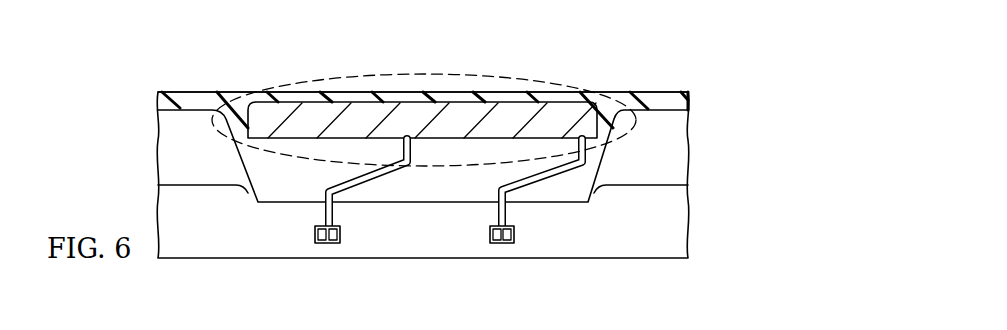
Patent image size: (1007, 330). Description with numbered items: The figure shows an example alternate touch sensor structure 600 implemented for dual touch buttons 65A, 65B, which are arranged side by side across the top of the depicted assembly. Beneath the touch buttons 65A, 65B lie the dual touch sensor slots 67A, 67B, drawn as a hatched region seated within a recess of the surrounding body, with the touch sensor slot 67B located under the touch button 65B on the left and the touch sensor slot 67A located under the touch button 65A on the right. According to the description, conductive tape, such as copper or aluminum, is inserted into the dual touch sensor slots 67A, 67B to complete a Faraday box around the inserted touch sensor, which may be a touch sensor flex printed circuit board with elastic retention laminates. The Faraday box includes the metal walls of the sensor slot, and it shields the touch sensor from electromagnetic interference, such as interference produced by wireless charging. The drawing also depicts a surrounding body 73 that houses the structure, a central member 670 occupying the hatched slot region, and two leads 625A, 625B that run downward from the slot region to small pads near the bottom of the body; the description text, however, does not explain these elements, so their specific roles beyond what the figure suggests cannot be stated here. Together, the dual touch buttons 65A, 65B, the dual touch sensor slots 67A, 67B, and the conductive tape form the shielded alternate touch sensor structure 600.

The substrate 73 is at (160, 100).
The touch button 65B is at (347, 92).
The touch button 65A is at (495, 88).
The die 670 is at (423, 81).
The touch sensor slot 67B is at (292, 108).
The touch sensor slot 67A is at (563, 112).
The first bond wire and pad 625B is at (315, 233).
The second bond wire and pad 625A is at (514, 233).
The alternate touch sensor structure 600 is at (456, 72).